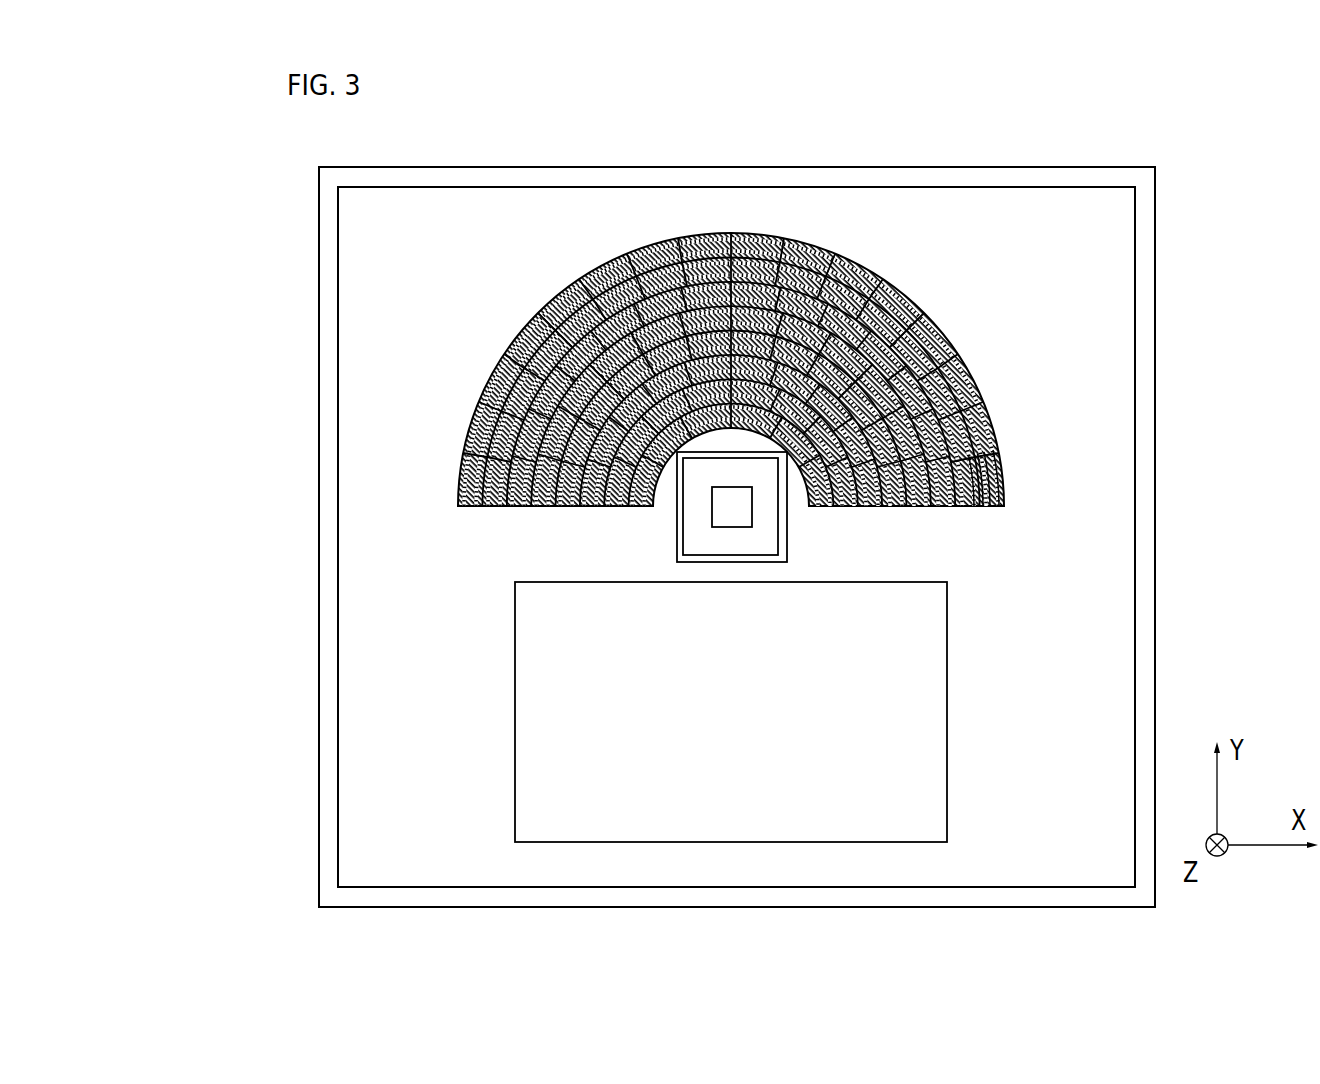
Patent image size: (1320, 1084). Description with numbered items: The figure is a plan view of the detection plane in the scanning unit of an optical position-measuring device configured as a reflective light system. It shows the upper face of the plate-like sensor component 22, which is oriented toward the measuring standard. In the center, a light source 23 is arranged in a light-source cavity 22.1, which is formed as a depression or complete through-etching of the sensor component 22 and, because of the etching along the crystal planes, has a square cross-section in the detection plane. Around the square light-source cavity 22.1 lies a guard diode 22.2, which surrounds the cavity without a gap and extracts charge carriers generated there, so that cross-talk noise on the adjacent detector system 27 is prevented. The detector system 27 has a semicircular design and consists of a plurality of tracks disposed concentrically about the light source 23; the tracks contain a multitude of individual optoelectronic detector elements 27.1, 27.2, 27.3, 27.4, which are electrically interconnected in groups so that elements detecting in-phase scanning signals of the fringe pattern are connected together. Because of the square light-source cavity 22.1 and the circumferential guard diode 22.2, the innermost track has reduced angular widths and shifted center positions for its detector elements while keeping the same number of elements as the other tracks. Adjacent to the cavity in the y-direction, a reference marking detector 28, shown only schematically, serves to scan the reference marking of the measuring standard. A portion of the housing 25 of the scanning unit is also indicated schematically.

The sensor component 22 is at (352, 793).
The light-source cavity 22.1 is at (690, 540).
The guard diode 22.2 is at (678, 522).
The light source 23 is at (733, 518).
The housing 25 is at (1148, 373).
The detector system 27 is at (942, 303).
The detector element 27.1 is at (1007, 493).
The detector element 27.2 is at (995, 508).
The detector element 27.3 is at (988, 508).
The detector element 27.4 is at (975, 507).
The reference marking detector 28 is at (923, 730).